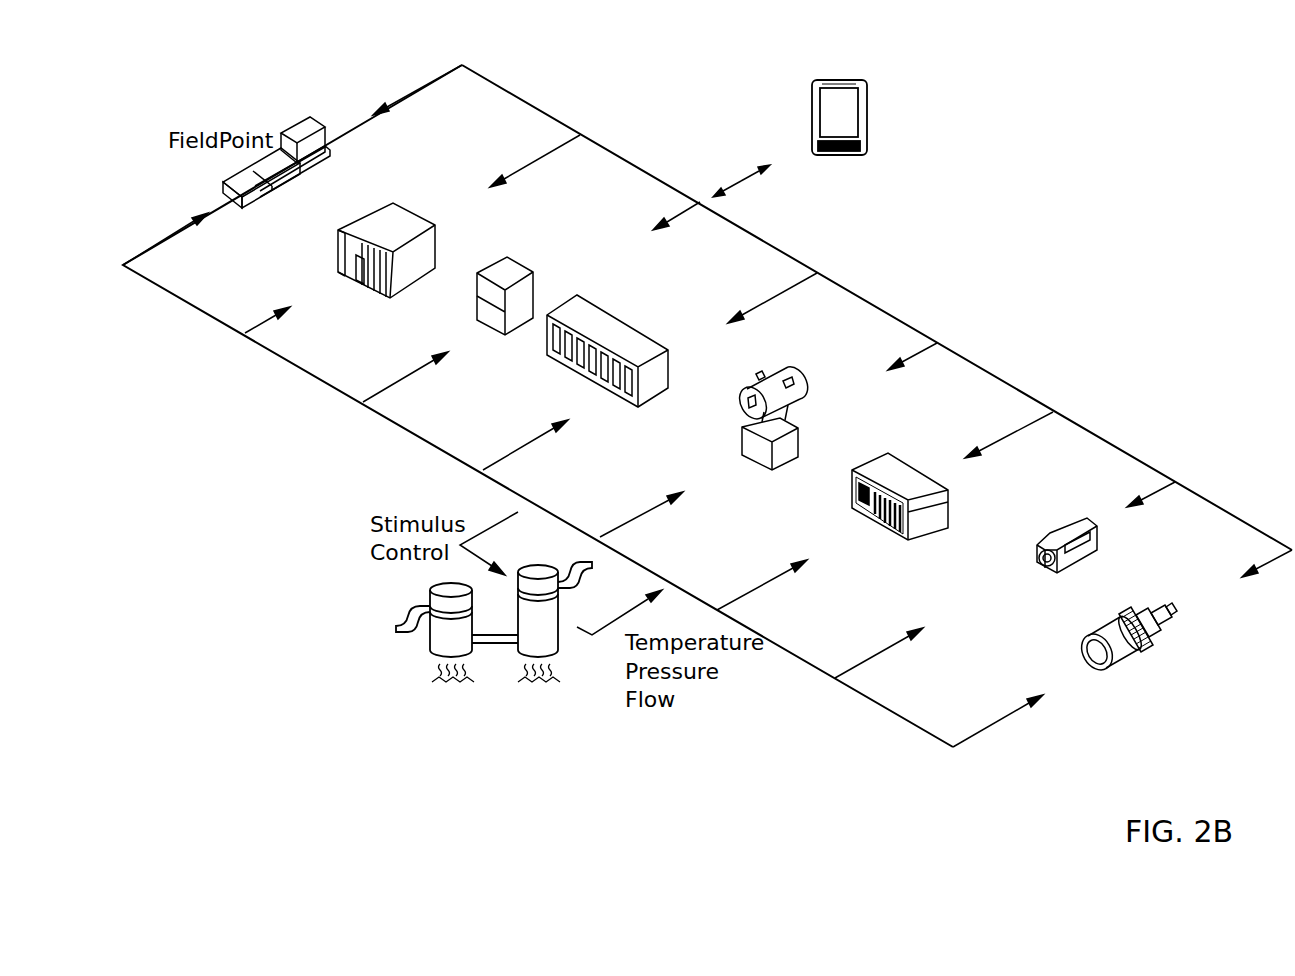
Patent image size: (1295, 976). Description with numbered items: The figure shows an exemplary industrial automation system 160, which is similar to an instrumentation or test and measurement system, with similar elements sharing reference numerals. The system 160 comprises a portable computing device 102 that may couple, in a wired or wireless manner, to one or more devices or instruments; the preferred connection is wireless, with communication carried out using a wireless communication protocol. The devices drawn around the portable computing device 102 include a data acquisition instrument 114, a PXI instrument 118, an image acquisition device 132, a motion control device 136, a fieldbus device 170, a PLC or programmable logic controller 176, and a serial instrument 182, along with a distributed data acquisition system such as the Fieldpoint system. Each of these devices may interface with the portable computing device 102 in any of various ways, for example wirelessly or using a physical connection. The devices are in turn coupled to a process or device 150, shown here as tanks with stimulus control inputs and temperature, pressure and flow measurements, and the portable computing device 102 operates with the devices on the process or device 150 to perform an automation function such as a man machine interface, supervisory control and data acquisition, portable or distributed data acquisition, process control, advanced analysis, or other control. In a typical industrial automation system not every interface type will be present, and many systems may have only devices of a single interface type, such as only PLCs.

The industrial automation system 160 is at (1170, 112).
The data acquisition instrument 114 is at (412, 210).
The serial instrument 182 is at (483, 313).
The PLC (Programmable Logic Controller) 176 is at (618, 338).
The portable computing device 102 is at (836, 162).
The fieldbus device 170 is at (785, 458).
The PXI instrument 118 is at (870, 468).
The image acquisition device 132 is at (1050, 582).
The motion control device 136 is at (1117, 660).
The process or device 150 is at (405, 615).